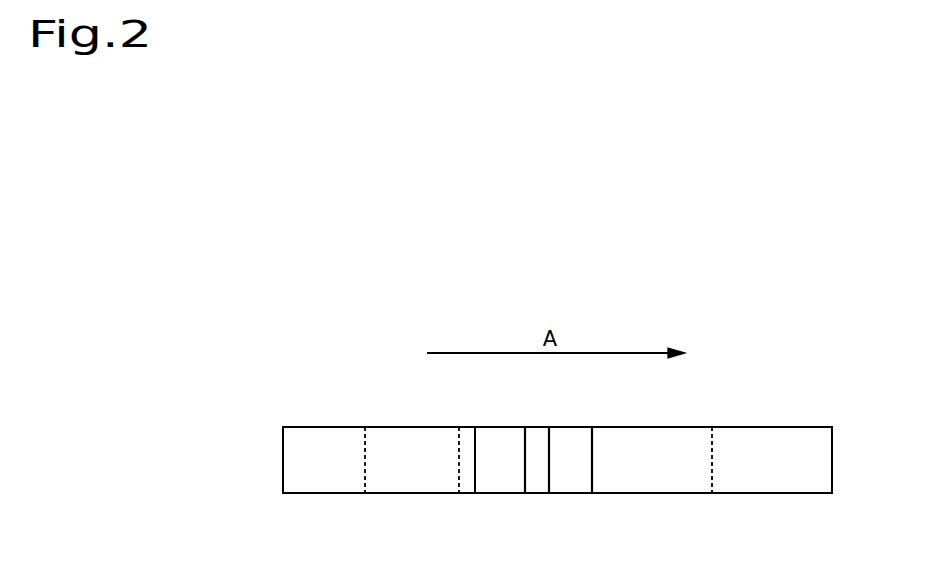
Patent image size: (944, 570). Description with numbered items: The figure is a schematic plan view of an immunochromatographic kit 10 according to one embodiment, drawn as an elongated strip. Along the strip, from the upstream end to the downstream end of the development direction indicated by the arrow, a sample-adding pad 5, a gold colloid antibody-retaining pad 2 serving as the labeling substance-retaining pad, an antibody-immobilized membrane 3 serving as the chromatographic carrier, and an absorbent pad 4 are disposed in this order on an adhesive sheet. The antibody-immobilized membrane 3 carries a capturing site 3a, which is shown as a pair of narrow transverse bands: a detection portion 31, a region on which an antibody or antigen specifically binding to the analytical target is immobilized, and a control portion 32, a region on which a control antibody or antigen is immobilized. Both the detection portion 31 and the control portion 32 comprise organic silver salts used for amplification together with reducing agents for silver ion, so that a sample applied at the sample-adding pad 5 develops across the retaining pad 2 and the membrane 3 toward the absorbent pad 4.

The immunochromatographic kit 10 is at (763, 411).
The sample-adding pad 5 is at (328, 427).
The gold colloid antibody-retaining pad 2 is at (413, 485).
The antibody-immobilized membrane 3 is at (578, 442).
The capturing site 3a is at (518, 424).
The detection portion 31 is at (521, 478).
The control portion 32 is at (553, 478).
The absorbent pad 4 is at (823, 460).